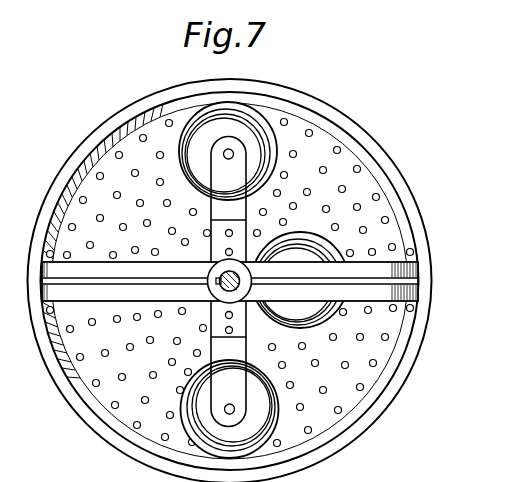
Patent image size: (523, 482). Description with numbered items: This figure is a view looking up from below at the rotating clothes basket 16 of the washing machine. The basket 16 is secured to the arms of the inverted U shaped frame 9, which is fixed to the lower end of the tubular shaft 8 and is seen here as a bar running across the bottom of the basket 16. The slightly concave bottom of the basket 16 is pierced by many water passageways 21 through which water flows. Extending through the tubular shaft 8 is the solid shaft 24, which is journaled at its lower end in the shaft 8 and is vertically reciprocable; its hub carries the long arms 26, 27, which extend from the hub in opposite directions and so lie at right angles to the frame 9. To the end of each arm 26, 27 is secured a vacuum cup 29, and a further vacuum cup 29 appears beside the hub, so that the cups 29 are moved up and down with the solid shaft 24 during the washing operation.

The tubular shaft 8 is at (241, 285).
The inverted U shaped frame 9 is at (403, 268).
The clothes basket 16 is at (388, 355).
The water passageways 21 is at (110, 407).
The solid shaft 24 is at (220, 276).
The long arm 26 is at (218, 400).
The long arm 27 is at (221, 154).
The vacuum cup 29 is at (263, 280).